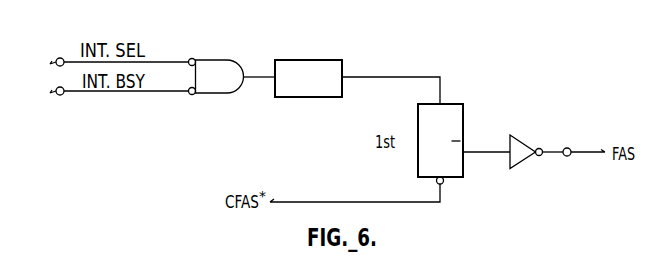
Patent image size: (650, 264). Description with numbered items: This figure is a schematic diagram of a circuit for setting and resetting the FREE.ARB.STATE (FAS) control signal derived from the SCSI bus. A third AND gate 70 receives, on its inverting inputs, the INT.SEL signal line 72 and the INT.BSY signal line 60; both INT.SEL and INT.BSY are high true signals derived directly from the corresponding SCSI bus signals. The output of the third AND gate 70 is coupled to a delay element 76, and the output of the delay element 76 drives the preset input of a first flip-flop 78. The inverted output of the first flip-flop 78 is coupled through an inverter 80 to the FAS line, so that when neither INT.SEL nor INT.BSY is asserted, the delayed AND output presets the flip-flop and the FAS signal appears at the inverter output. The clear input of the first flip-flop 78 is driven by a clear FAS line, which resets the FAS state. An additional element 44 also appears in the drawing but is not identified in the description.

The INT. SEL input terminal 72 is at (60, 57).
The INT. BSY input terminal 60 is at (60, 95).
The AND gate 70 is at (218, 58).
The delay element DEL 76 is at (318, 57).
The flip-flop (1st) 78 is at (450, 103).
The inverter 80 is at (518, 137).
The FAS output terminal 44 is at (567, 146).